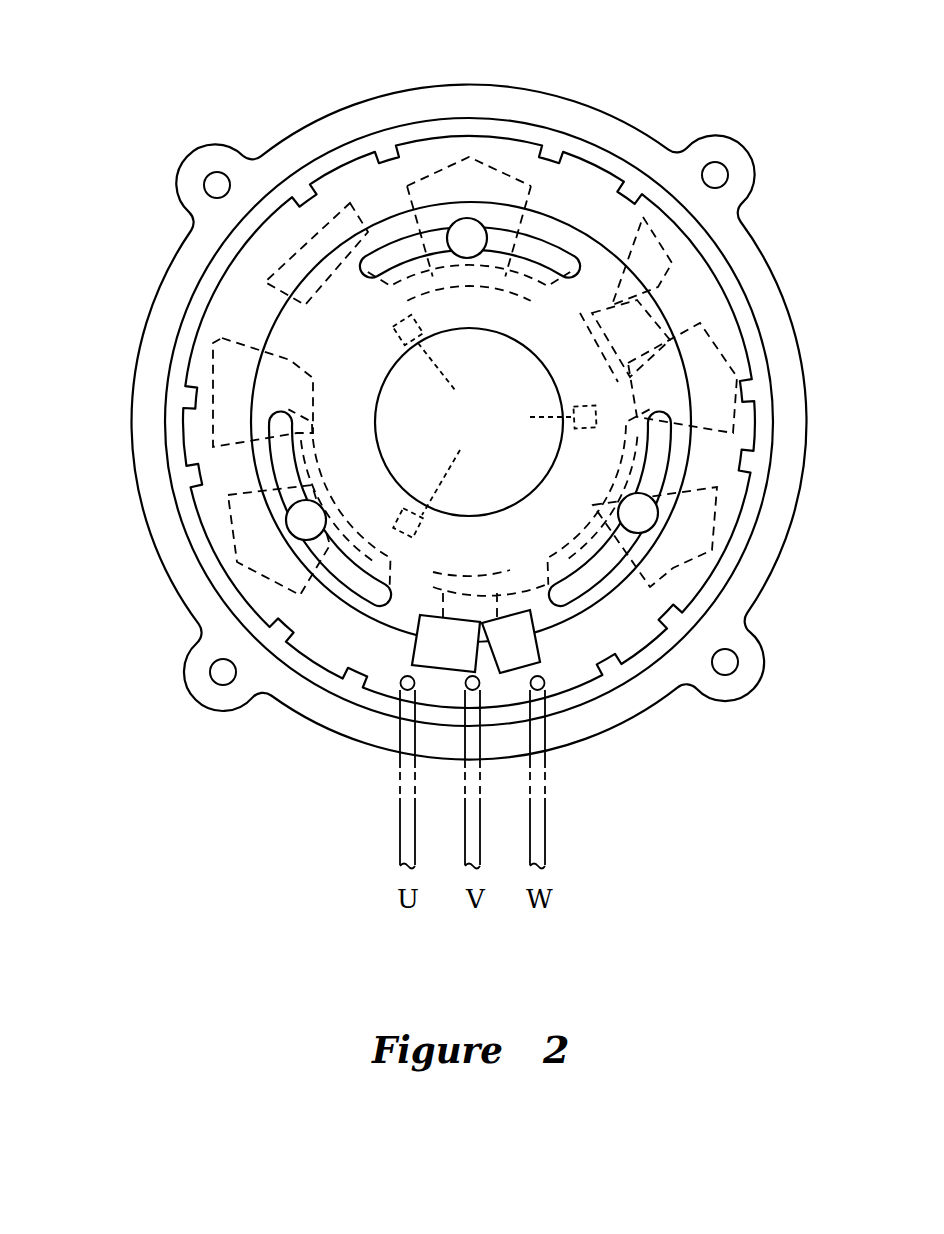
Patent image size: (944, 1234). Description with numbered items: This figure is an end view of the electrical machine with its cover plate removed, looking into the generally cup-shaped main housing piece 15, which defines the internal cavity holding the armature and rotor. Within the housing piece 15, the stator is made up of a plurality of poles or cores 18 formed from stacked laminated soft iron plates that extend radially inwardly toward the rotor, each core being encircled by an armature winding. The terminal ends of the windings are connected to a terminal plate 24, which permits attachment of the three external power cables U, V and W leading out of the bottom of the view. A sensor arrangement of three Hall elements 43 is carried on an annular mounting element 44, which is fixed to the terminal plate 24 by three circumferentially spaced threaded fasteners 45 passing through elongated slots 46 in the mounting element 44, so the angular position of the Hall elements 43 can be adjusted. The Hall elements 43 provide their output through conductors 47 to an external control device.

The main housing piece 15 is at (649, 140).
The terminal plate 24 is at (722, 291).
The annular mounting element 44 is at (690, 371).
The poles or cores 18 is at (273, 437).
The elongated slots 46 is at (656, 462).
The threaded fasteners 45 is at (650, 522).
The conductors 47 is at (540, 632).
The Hall elements 43 is at (486, 426).